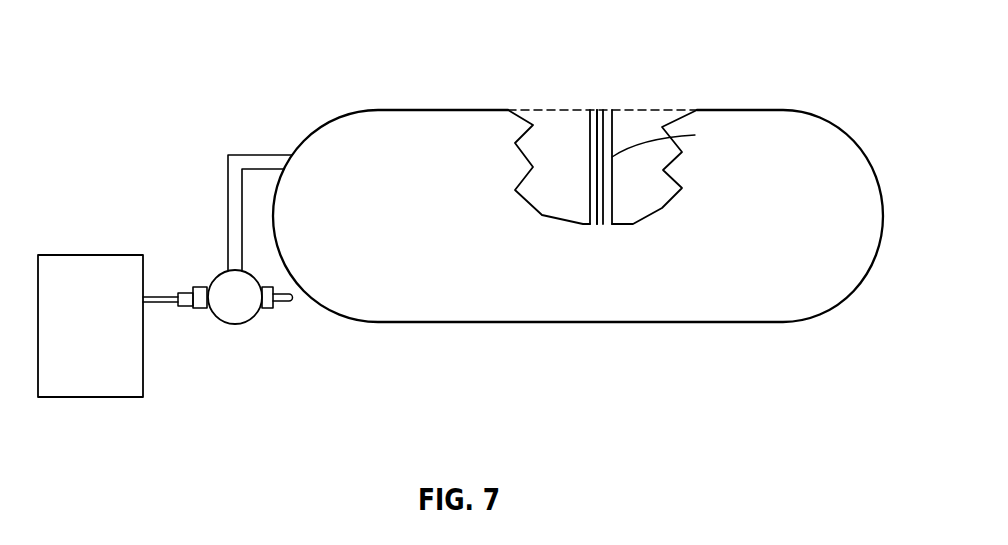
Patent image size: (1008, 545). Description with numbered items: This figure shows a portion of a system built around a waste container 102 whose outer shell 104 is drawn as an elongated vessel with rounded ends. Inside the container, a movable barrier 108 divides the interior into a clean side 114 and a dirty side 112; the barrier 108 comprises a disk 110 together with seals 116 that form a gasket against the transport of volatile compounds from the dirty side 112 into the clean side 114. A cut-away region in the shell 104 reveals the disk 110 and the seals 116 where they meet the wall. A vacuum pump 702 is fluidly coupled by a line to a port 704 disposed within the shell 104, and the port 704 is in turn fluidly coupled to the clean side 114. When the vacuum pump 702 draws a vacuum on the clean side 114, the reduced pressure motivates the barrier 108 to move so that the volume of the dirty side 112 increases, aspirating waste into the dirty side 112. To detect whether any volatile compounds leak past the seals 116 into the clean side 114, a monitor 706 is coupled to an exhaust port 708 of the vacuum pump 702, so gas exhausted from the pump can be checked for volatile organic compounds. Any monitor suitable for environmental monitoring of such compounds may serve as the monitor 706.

The waste container 102 is at (581, 62).
The shell 104 is at (410, 108).
The barrier 108 is at (602, 99).
The disk 110 is at (676, 139).
The dirty side 112 is at (658, 202).
The clean side 114 is at (544, 148).
The seals 116 is at (597, 117).
The vacuum pump 702 is at (235, 328).
The port 704 is at (293, 155).
The monitor 706 is at (113, 340).
The exhaust port 708 is at (187, 294).